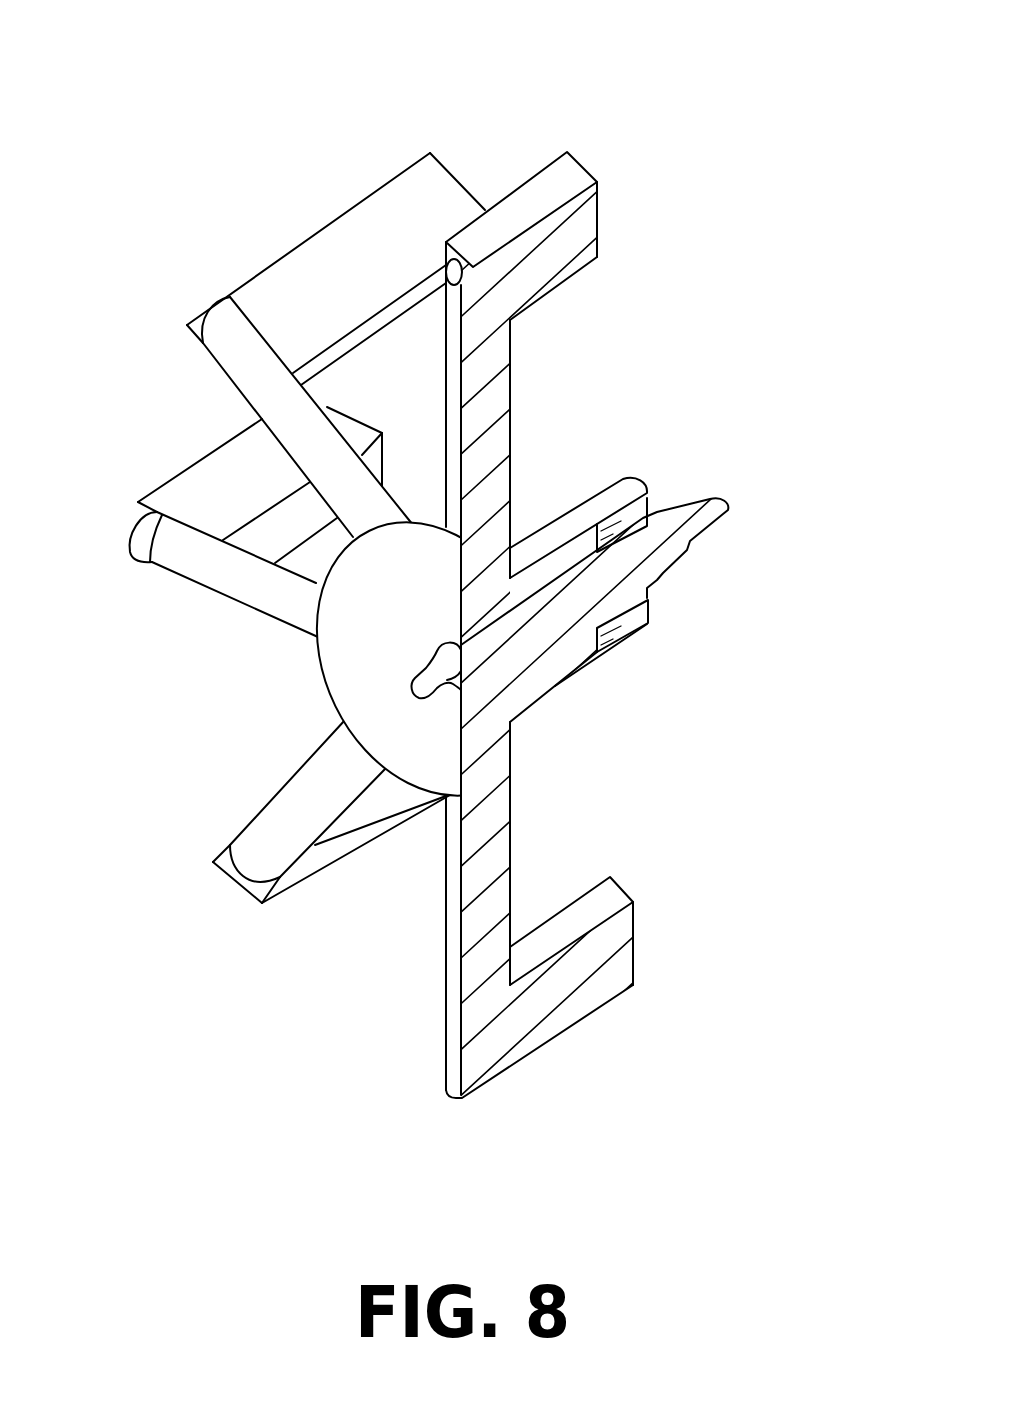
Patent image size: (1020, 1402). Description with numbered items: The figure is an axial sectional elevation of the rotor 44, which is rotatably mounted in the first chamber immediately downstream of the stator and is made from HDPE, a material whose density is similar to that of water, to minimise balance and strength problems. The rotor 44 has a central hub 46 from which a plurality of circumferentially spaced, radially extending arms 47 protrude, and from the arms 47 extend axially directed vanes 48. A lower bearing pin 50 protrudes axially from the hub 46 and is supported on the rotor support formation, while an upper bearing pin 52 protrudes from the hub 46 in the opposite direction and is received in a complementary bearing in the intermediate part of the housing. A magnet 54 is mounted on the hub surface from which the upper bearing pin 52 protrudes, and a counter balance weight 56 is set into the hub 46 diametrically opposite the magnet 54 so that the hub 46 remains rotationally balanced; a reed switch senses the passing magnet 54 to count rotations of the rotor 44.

The rotor 44 is at (452, 580).
The hub 46 is at (568, 513).
The arms 47 is at (500, 826).
The vanes 48 is at (233, 350).
The lower bearing pin 50 is at (421, 684).
The upper bearing pin 52 is at (728, 503).
The magnet 54 is at (647, 503).
The counter balance weight 56 is at (648, 603).